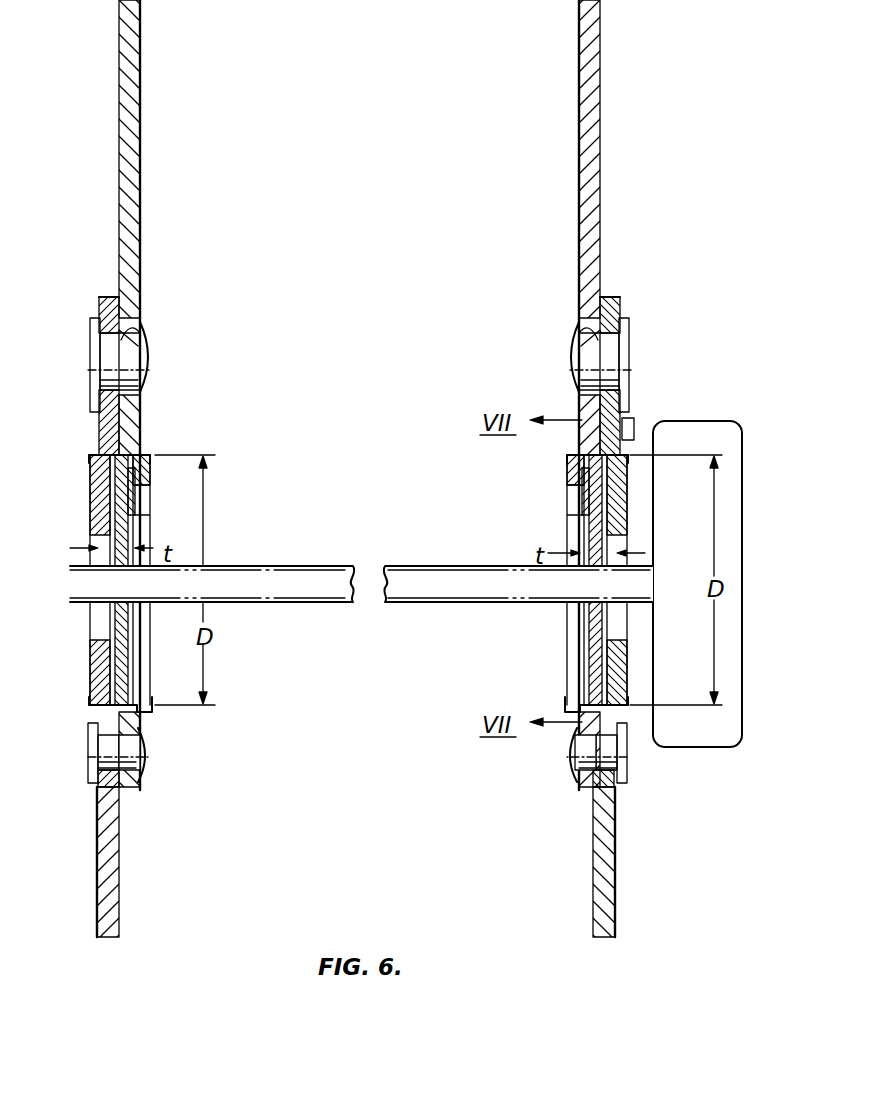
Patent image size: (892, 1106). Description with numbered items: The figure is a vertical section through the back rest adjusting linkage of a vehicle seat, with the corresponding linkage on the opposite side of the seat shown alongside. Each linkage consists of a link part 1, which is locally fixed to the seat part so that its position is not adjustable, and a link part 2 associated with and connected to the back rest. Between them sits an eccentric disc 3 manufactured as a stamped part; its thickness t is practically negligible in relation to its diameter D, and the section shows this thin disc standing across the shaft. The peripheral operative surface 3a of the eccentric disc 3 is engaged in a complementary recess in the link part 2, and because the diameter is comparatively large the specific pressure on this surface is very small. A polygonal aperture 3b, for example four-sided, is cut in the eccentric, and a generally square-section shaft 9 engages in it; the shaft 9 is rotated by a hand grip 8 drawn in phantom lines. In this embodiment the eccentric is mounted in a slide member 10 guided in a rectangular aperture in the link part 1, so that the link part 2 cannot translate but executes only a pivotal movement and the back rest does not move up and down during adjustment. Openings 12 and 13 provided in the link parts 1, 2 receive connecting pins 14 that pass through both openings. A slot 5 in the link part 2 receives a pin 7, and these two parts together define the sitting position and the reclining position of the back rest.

The link part 1 is at (110, 920).
The link part 2 is at (133, 97).
The eccentric disc 3 is at (130, 528).
The operative surface 3a is at (140, 455).
The aperture 3b is at (113, 620).
The slot 5 is at (118, 800).
The pin 7 is at (140, 755).
The hand grip 8 is at (715, 745).
The shaft 9 is at (430, 578).
The slide member 10 is at (128, 497).
The opening 12 is at (122, 315).
The opening 13 is at (128, 332).
The connecting pin 14 is at (143, 358).